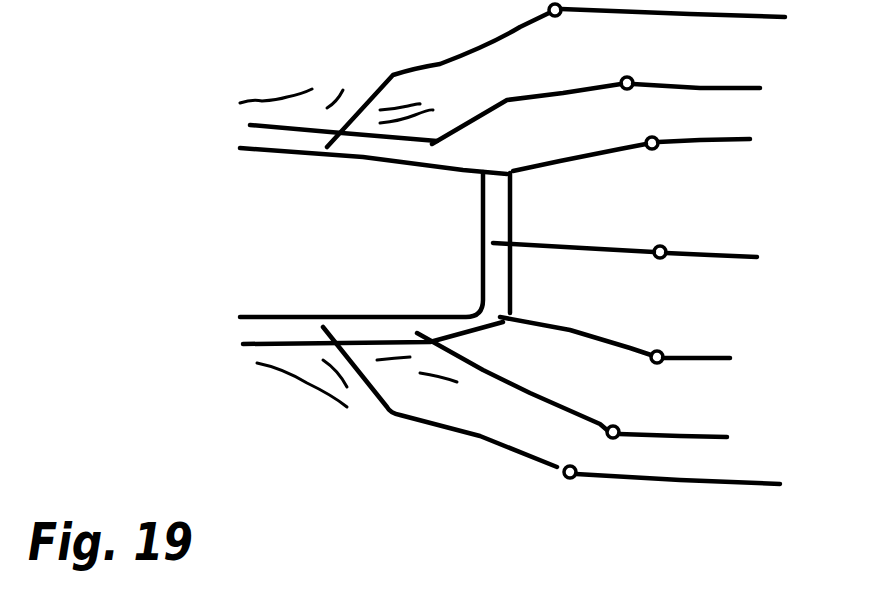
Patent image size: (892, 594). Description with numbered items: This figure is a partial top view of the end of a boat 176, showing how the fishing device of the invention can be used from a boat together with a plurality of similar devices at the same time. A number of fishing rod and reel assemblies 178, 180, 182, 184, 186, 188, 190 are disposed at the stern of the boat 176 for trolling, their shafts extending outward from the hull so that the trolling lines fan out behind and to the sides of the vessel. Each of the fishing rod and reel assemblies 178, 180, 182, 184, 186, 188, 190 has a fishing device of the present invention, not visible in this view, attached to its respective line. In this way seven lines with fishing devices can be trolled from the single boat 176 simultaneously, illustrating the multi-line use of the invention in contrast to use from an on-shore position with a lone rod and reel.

The boat 176 is at (360, 250).
The fishing rod and reel assembly 178 is at (363, 99).
The fishing rod and reel assembly 180 is at (459, 129).
The fishing rod and reel assembly 182 is at (516, 166).
The fishing rod and reel assembly 184 is at (533, 237).
The fishing rod and reel assembly 186 is at (527, 317).
The fishing rod and reel assembly 188 is at (486, 377).
The fishing rod and reel assembly 190 is at (383, 407).